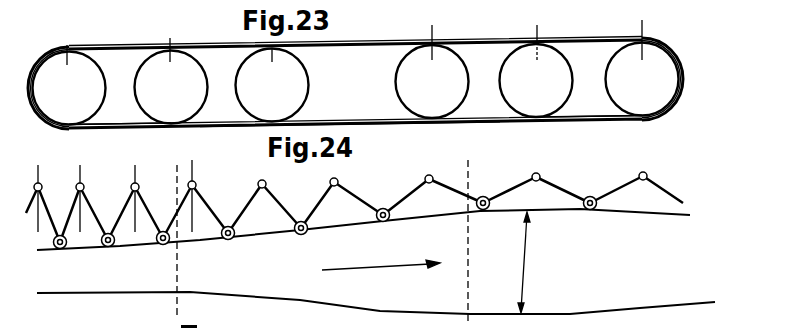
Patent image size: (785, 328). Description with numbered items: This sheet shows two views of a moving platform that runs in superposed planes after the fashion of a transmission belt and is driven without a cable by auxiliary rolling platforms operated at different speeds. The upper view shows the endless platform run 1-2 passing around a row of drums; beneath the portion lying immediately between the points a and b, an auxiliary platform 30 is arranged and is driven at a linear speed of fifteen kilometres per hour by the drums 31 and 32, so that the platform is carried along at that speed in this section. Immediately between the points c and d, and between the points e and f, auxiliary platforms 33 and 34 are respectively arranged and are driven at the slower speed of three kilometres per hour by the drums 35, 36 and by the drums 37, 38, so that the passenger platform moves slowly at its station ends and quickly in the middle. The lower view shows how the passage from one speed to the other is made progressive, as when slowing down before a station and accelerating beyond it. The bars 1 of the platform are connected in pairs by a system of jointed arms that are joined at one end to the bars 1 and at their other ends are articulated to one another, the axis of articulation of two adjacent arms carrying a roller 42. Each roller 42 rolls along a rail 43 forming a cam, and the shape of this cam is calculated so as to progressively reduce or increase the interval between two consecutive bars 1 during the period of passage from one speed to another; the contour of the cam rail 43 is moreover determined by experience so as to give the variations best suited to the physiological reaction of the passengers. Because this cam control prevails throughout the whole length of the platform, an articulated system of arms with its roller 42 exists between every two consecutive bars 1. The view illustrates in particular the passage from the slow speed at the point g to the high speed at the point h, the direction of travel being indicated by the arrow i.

In FIG. 23, the endless belt 1-2 is at (352, 42).
In FIG. 23, the auxiliary platform 30 is at (340, 125).
In FIG. 23, the drum 31 is at (254, 110).
In FIG. 23, the drum 32 is at (437, 108).
In FIG. 23, the auxiliary platform 33 is at (110, 126).
In FIG. 23, the auxiliary platform 34 is at (583, 117).
In FIG. 23, the drum 35 is at (50, 110).
In FIG. 23, the drum 36 is at (176, 113).
In FIG. 23, the drum 37 is at (532, 102).
In FIG. 23, the drum 38 is at (645, 106).
In FIG. 24, the bar 1 is at (82, 210).
In FIG. 24, the roller 42 is at (325, 241).
In FIG. 24, the rail forming a cam 43 is at (522, 262).
In FIG. 23, the point a is at (272, 48).
In FIG. 23, the point b is at (432, 42).
In FIG. 23, the point c is at (67, 47).
In FIG. 23, the point d is at (170, 42).
In FIG. 23, the point e is at (537, 41).
In FIG. 23, the point f is at (642, 40).
In FIG. 24, the point g is at (168, 240).
In FIG. 24, the point h is at (476, 242).
In FIG. 24, the arrow i is at (381, 258).